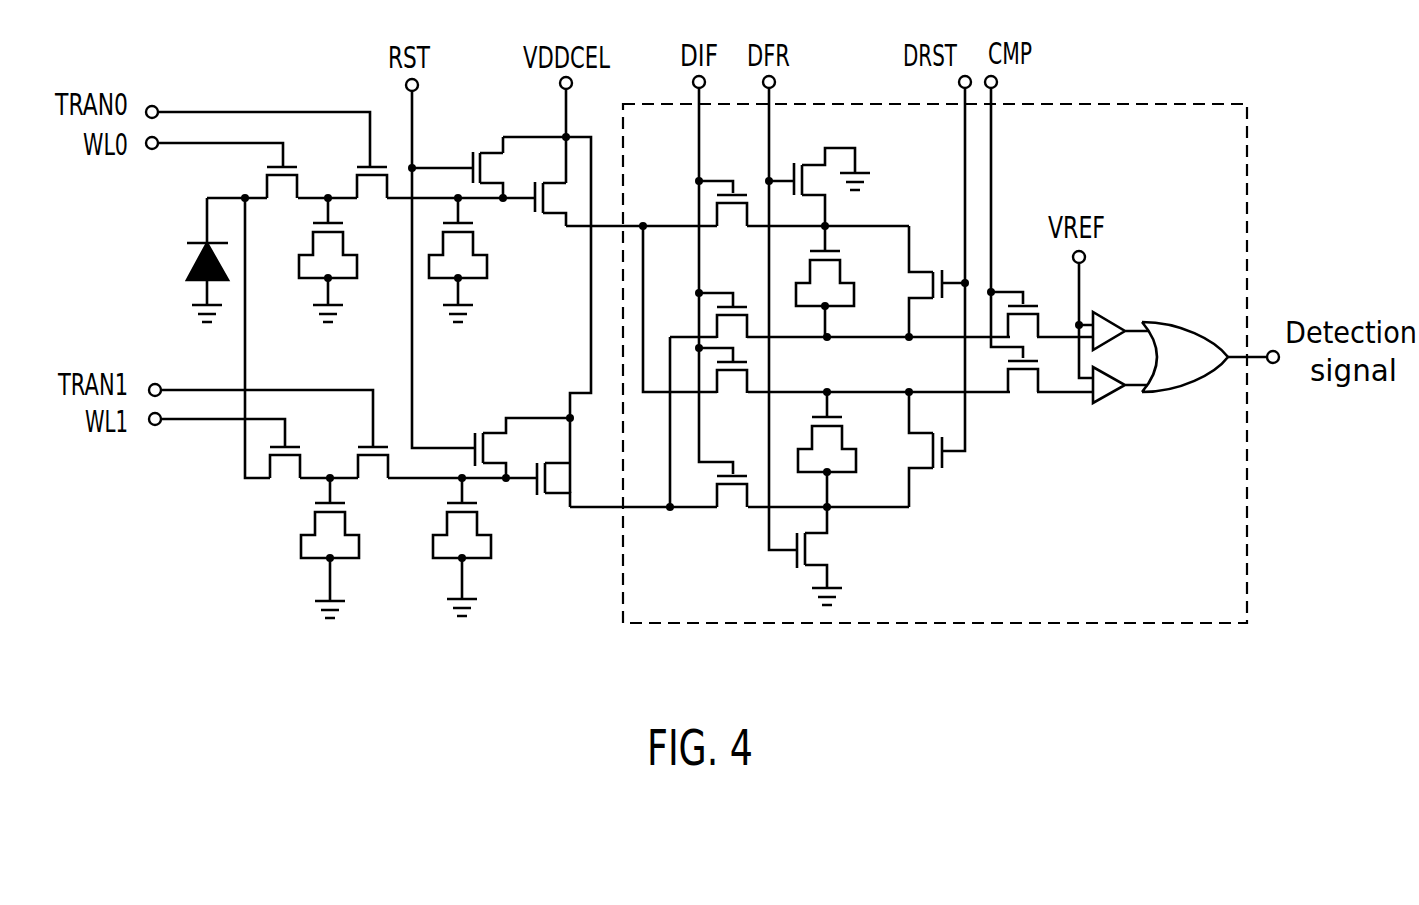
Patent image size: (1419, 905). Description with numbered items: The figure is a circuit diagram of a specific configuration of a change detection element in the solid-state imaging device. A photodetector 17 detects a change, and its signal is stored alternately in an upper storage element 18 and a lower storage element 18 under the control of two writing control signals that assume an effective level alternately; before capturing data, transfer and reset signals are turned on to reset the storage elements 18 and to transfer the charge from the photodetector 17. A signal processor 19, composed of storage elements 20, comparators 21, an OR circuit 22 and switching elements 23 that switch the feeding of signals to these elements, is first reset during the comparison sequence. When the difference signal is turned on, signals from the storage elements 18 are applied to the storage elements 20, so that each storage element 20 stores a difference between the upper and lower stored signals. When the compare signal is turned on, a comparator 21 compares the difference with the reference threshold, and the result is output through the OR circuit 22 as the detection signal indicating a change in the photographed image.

The photodetector 17 is at (187, 262).
The storage element 18 is at (352, 247).
The signal processor 19 is at (1194, 102).
The storage element 20 is at (847, 275).
The comparator 21 is at (1112, 308).
The OR circuit 22 is at (1198, 328).
The switching element 23 is at (742, 185).